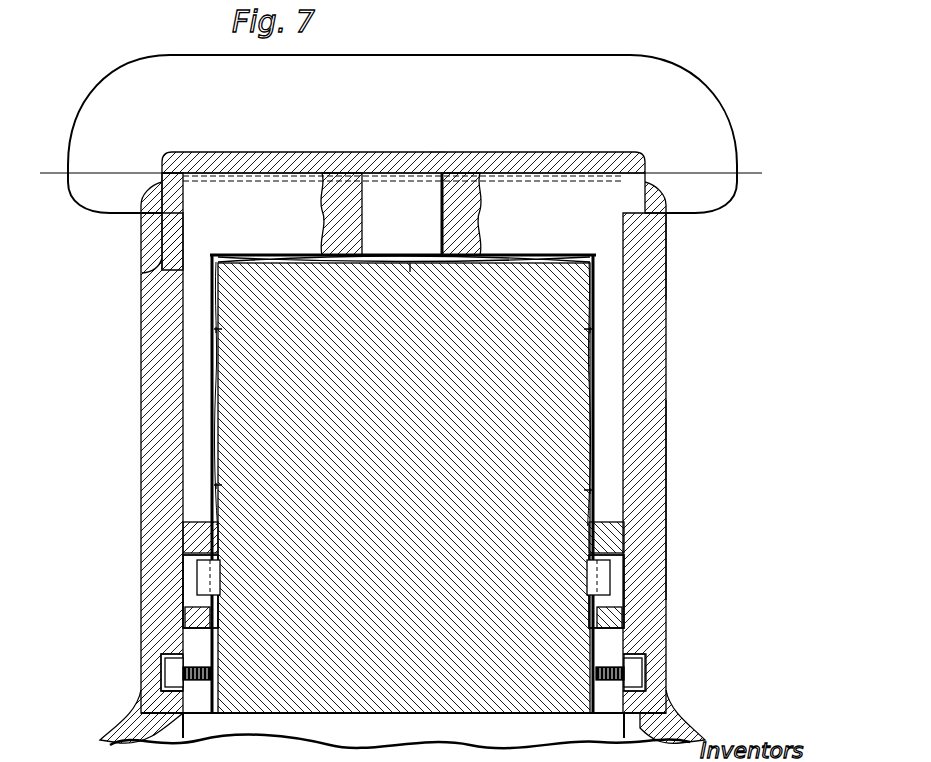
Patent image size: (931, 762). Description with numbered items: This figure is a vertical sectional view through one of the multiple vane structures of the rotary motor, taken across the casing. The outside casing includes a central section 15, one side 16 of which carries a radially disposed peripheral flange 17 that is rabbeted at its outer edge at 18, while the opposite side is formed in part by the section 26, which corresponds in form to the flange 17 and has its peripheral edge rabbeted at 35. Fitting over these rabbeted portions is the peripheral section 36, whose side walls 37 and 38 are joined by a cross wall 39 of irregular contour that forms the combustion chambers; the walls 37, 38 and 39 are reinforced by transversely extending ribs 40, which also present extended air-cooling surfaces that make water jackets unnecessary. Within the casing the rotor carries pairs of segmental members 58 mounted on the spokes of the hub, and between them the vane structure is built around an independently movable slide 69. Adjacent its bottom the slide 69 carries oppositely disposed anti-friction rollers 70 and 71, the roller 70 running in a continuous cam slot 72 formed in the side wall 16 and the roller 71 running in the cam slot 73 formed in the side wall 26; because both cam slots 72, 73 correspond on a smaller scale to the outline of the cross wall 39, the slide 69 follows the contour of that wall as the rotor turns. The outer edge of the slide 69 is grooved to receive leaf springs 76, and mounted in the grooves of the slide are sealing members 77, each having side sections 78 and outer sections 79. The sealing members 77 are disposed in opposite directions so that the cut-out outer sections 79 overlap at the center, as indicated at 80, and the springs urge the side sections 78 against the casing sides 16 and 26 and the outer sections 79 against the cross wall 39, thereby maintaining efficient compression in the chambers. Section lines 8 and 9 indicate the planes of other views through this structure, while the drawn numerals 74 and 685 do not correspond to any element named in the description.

The section line 8- 8 is at (755, 180).
The section line 9- 9 is at (416, 40).
The transversely extending rib 40 is at (133, 82).
The peripheral section 36 is at (582, 162).
The side wall 37 is at (150, 193).
The side wall 38 is at (640, 200).
The cross wall 39 is at (428, 165).
The rabbeted peripheral edge 35 is at (143, 275).
The casing side section 26 is at (153, 478).
The casing side 16 is at (668, 528).
The radially disposed peripheral flange 17 is at (668, 482).
The rabbet 18 is at (668, 244).
The left post 74 is at (248, 195).
The outer section of sealing member 79 is at (508, 190).
The overlap 80 is at (384, 190).
The slide 69 is at (565, 301).
The leaf spring 76 is at (424, 250).
The membrane / liner sheet 685 is at (612, 324).
The side section of sealing member 78 is at (188, 363).
The central section 15 is at (210, 430).
The sealing member 77 is at (615, 452).
The anti-friction roller 70 is at (640, 650).
The anti-friction roller 71 is at (162, 653).
The cam slot 72 is at (645, 691).
The cam slot 73 is at (165, 694).
The segmental member 58 is at (575, 714).